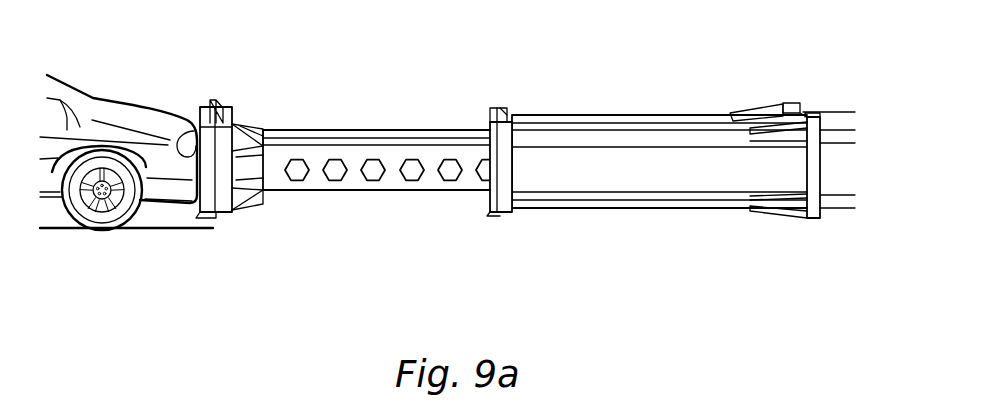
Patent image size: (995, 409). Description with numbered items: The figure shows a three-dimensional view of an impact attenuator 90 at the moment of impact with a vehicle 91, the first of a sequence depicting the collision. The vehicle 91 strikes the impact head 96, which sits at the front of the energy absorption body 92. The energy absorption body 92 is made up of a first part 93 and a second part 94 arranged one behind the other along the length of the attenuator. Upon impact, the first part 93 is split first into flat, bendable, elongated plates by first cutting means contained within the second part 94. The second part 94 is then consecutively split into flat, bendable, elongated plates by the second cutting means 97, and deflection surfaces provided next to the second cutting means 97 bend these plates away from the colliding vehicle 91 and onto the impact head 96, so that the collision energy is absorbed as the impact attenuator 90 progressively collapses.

The impact attenuator 90 is at (525, 165).
The vehicle 91 is at (95, 80).
The energy absorption body 92 is at (544, 212).
The first part 93 is at (233, 223).
The second part 94 is at (683, 187).
The impact head 96 is at (213, 102).
The second cutting means 97 is at (503, 107).